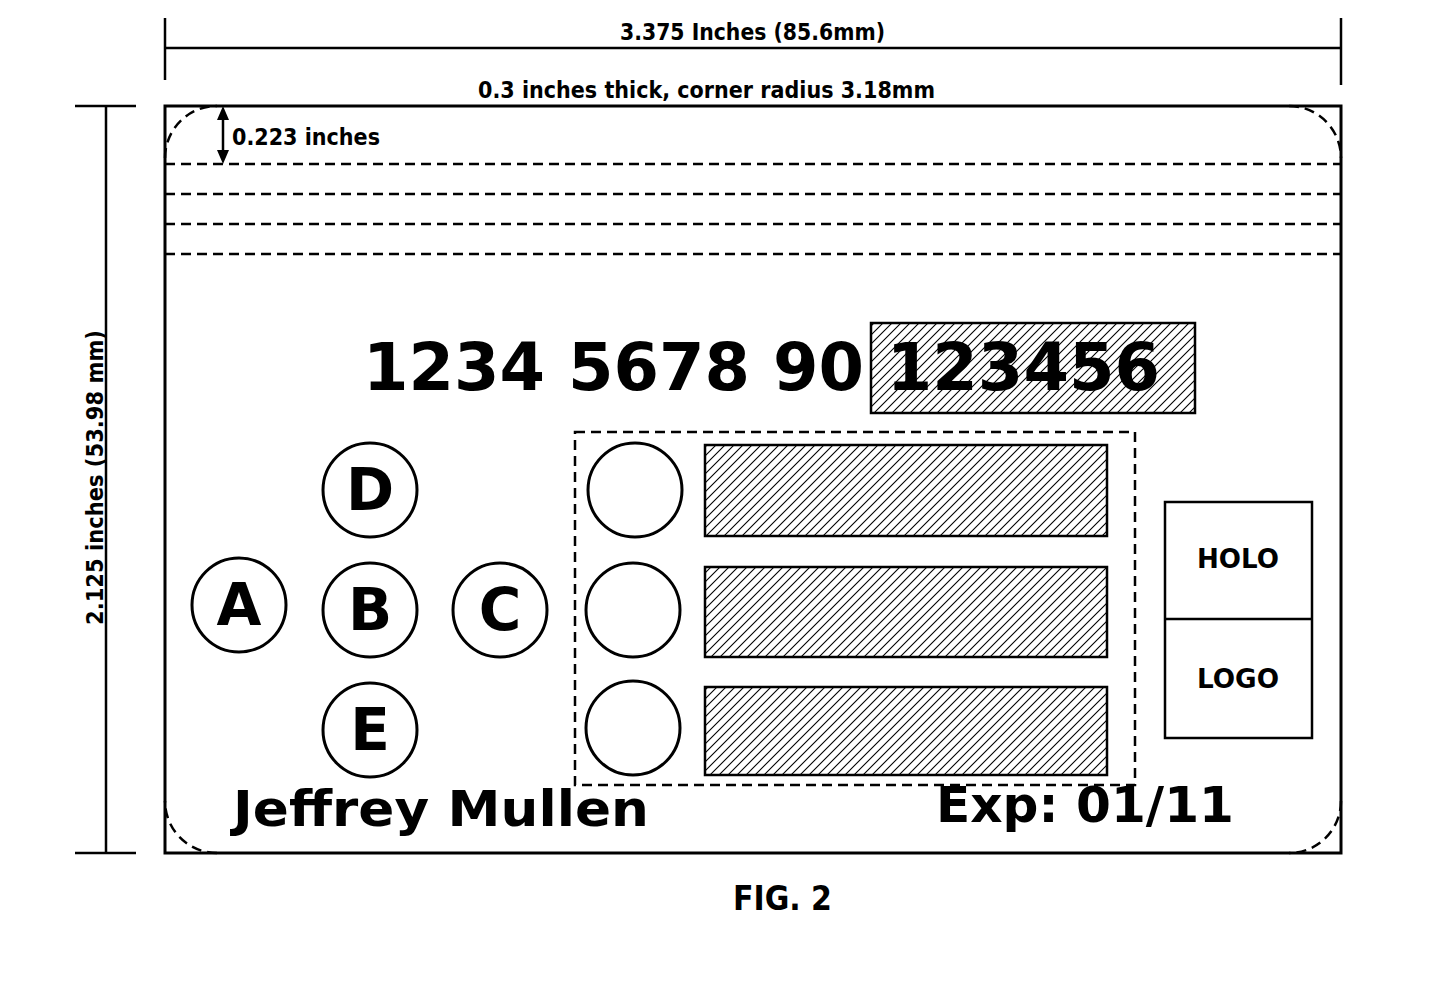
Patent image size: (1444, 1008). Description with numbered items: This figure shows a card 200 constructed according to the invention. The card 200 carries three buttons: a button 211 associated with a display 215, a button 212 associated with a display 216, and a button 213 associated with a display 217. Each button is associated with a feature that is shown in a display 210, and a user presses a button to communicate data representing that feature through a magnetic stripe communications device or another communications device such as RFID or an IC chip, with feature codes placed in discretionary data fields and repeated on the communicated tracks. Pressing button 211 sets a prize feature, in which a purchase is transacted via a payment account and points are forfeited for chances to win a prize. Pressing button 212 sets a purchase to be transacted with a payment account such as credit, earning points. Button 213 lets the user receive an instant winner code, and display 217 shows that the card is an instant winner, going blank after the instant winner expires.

The card 200 is at (804, 479).
The display 210 is at (783, 432).
The button 211 is at (591, 478).
The button 212 is at (600, 578).
The button 213 is at (600, 696).
The display 215 is at (742, 536).
The display 216 is at (742, 657).
The display 217 is at (728, 775).